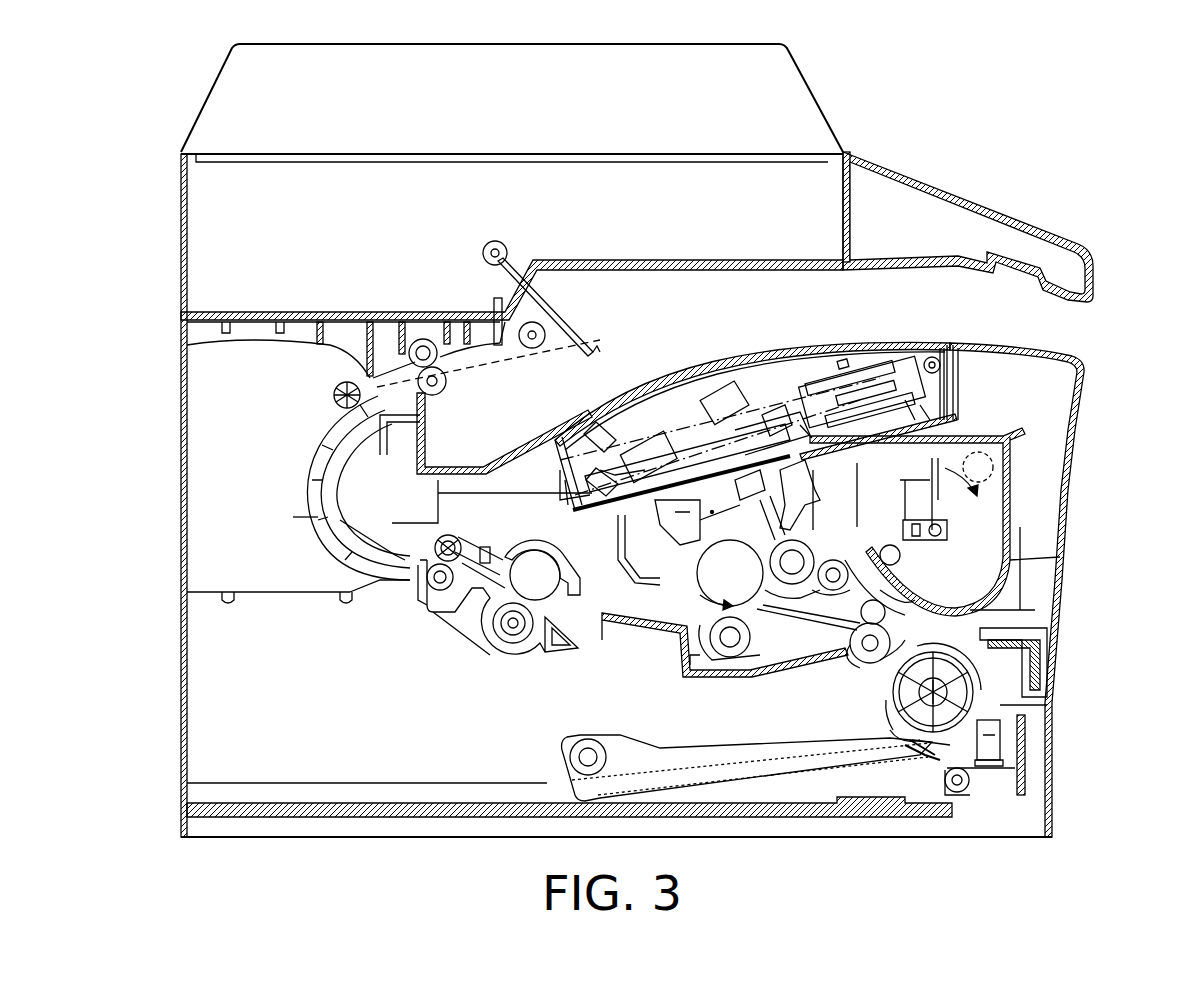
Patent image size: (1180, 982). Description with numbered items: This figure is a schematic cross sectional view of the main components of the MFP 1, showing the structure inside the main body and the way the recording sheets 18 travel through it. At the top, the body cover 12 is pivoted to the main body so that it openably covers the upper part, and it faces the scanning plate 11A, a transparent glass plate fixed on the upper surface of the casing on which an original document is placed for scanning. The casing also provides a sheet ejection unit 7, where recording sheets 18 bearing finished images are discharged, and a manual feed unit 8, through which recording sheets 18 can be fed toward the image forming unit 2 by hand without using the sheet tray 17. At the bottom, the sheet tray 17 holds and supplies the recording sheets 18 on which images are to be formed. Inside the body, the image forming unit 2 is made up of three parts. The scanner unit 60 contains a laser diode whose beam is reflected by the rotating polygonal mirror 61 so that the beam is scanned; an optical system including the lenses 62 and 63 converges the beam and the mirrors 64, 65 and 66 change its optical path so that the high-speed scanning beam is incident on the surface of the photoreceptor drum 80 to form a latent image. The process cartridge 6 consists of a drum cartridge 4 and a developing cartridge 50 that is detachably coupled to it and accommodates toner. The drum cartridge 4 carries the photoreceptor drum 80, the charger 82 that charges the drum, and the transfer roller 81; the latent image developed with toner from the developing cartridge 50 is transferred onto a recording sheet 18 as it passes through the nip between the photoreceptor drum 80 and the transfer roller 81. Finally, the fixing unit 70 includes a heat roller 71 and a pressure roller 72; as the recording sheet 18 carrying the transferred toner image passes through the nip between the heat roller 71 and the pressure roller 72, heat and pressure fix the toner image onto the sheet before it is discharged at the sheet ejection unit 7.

The MFP 1 is at (1038, 167).
The image forming unit 2 is at (640, 660).
The drum cartridge 4 is at (808, 456).
The process cartridge 6 is at (1130, 362).
The sheet ejection unit 7 is at (1066, 328).
The manual feed unit 8 is at (1078, 603).
The scanning plate 11A is at (846, 153).
The body cover 12 is at (773, 88).
The sheet tray 17 is at (1050, 787).
The recording sheet 18 is at (298, 783).
The developing cartridge 50 is at (996, 428).
The scanner unit 60 is at (747, 411).
The polygonal mirror 61 is at (877, 377).
The lens 62 is at (720, 398).
The lens 63 is at (634, 456).
The mirror 64 is at (583, 420).
The mirror 65 is at (583, 490).
The mirror 66 is at (773, 412).
The fixing unit 70 is at (508, 625).
The heat roller 71 is at (546, 593).
The pressure roller 72 is at (522, 656).
The photoreceptor drum 80 is at (713, 584).
The transfer roller 81 is at (730, 658).
The charger 82 is at (700, 528).